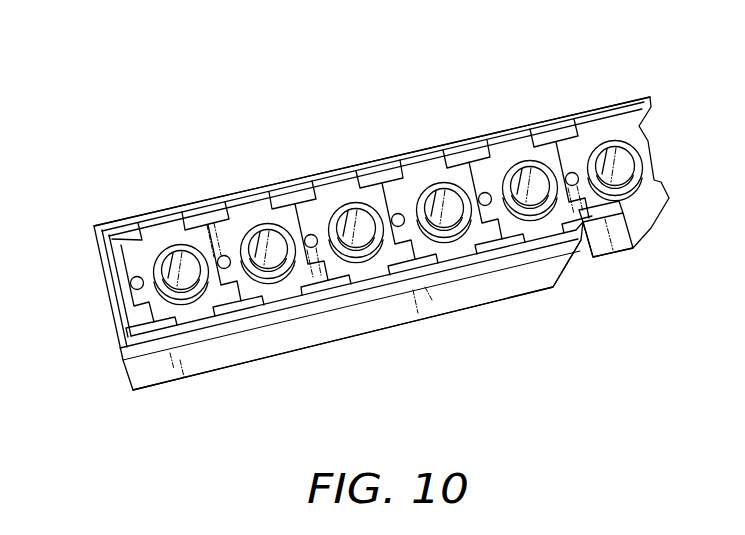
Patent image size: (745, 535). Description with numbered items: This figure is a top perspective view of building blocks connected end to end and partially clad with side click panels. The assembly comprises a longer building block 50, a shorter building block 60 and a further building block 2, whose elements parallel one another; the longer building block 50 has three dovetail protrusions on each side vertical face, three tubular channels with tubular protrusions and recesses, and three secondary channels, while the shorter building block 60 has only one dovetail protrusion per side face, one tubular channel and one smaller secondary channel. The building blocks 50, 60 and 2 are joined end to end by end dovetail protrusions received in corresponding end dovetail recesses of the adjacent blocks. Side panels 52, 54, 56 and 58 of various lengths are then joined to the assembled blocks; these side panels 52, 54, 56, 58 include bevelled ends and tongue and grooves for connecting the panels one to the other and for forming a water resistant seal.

The building block 2 is at (630, 263).
The longer building block 50 is at (255, 222).
The side panel 52 is at (405, 333).
The side panel 54 is at (96, 295).
The side panel 56 is at (148, 205).
The side panel 58 is at (533, 123).
The shorter building block 60 is at (423, 178).